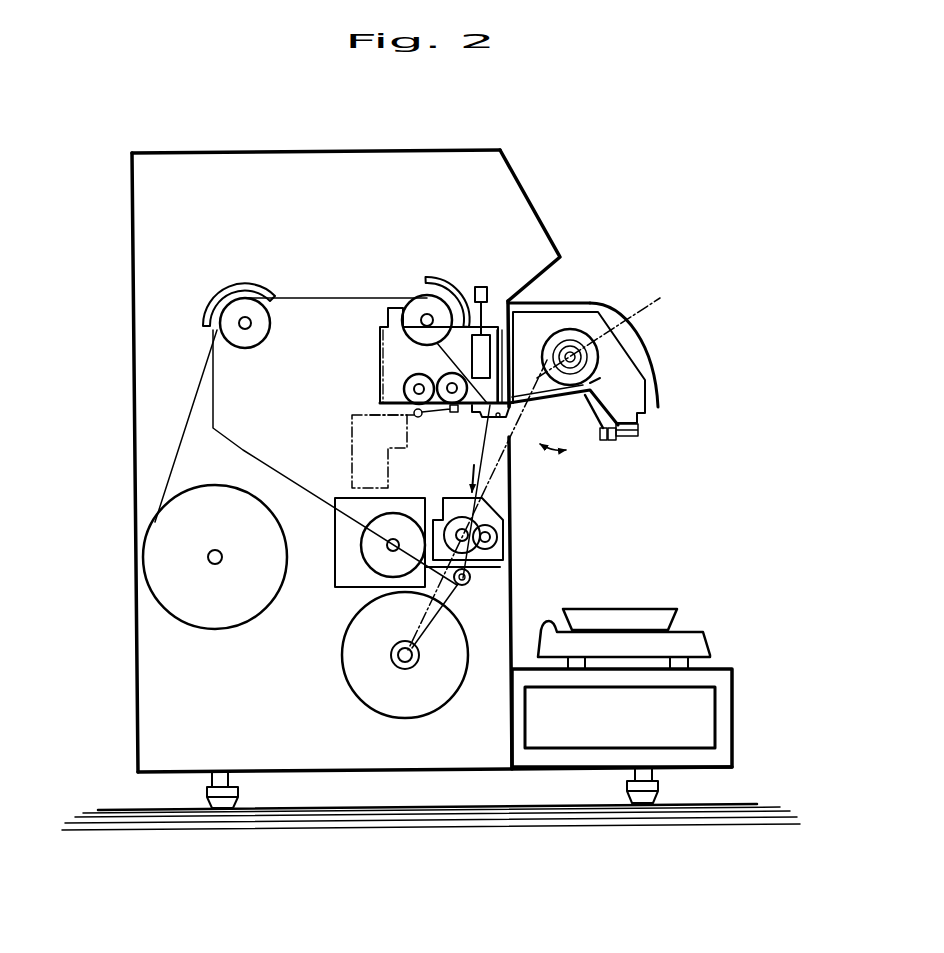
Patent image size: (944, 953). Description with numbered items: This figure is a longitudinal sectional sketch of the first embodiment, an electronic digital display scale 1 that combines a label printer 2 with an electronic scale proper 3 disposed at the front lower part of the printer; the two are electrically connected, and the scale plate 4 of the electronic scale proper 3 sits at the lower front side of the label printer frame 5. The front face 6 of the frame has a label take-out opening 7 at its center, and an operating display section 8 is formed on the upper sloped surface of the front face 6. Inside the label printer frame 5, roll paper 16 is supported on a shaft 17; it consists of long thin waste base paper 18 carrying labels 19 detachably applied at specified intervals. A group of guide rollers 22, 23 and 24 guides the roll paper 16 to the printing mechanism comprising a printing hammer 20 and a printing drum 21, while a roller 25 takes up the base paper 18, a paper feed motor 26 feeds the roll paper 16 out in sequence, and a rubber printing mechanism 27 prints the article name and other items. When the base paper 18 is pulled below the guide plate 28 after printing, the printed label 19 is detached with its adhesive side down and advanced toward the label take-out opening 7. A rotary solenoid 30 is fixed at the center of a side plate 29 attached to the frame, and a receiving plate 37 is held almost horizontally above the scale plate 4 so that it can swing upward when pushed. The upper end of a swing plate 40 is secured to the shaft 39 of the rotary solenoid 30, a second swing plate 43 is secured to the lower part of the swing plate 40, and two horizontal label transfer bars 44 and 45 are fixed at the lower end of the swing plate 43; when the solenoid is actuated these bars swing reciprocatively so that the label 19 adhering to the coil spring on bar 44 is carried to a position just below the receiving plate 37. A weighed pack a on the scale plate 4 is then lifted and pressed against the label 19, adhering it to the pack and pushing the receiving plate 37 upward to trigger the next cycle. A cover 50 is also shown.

The electronic digital display scale 1 is at (682, 326).
The label printer 2 is at (130, 445).
The electronic scale proper 3 is at (739, 703).
The scale plate 4 is at (703, 634).
The label printer frame 5 is at (133, 351).
The front face 6 is at (509, 627).
The label take-out opening 7 is at (514, 440).
The operating display section 8 is at (516, 178).
The roll paper 16 is at (209, 618).
The shaft 17 is at (215, 550).
The base paper 18 is at (513, 508).
The label 19 is at (510, 418).
The printing hammer 20 is at (455, 413).
The printing drum 21 is at (440, 380).
The guide roller 22 is at (230, 318).
The guide roller 23 is at (418, 297).
The guide roller 24 is at (405, 390).
The roller 25 is at (413, 664).
The paper feed motor 26 is at (378, 565).
The rubber printing mechanism 27 is at (484, 343).
The guide plate 28 is at (490, 414).
The side plate 29 is at (532, 322).
The rotary solenoid 30 is at (588, 337).
The receiving plate 37 is at (639, 432).
The shaft 39 is at (654, 304).
The swing plate 40 is at (532, 382).
The swing plate 43 is at (623, 412).
The label transfer bar 44 is at (604, 442).
The label transfer bar 45 is at (614, 442).
The cover 50 is at (651, 357).
The pack a is at (650, 612).